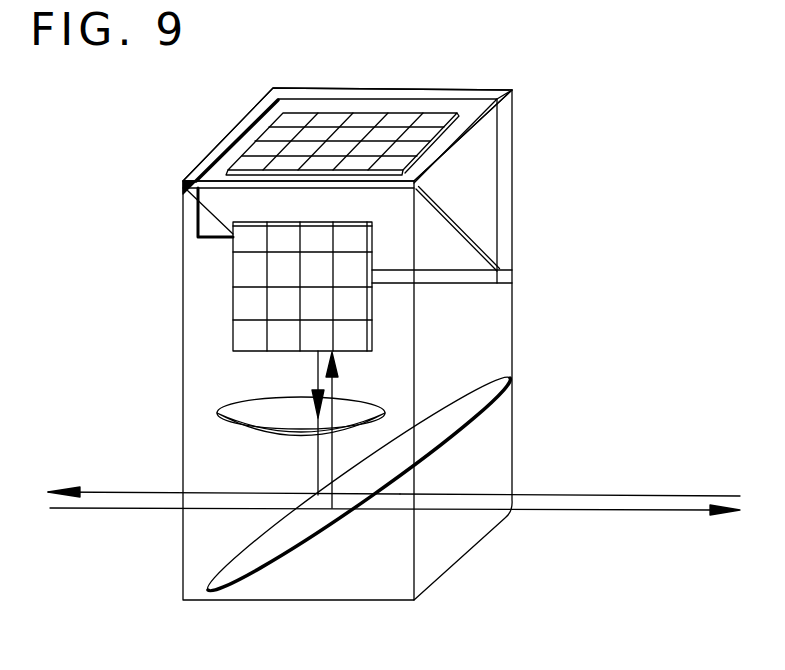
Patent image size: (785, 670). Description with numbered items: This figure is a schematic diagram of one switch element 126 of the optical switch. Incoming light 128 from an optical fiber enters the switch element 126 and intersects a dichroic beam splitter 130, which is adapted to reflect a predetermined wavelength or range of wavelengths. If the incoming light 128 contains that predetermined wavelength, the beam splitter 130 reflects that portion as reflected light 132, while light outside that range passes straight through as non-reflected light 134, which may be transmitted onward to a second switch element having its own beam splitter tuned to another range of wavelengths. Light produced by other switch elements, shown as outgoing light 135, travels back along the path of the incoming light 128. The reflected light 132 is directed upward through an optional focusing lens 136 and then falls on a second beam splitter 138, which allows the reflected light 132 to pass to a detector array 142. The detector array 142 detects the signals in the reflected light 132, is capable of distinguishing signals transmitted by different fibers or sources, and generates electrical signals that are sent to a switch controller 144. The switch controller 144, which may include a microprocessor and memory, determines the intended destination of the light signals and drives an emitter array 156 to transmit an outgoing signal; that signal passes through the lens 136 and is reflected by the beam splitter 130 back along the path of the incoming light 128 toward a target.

The switch element 126 is at (556, 94).
The switch controller 144 is at (363, 89).
The detector array 142 is at (443, 127).
The beam splitter 138 is at (473, 239).
The emitter array 156 is at (233, 297).
The focusing lens 136 is at (217, 415).
The reflected light 132 is at (333, 453).
The beam splitter 130 is at (293, 547).
The outgoing light 135 is at (113, 490).
The non-reflected light 134 is at (662, 495).
The incoming light 128 is at (98, 510).